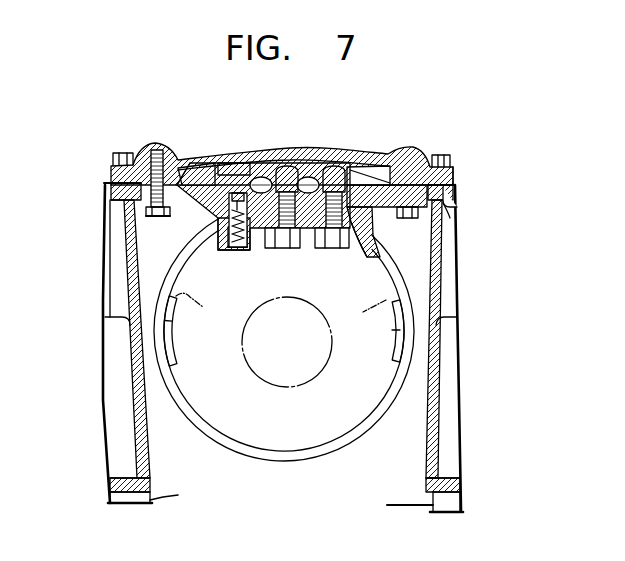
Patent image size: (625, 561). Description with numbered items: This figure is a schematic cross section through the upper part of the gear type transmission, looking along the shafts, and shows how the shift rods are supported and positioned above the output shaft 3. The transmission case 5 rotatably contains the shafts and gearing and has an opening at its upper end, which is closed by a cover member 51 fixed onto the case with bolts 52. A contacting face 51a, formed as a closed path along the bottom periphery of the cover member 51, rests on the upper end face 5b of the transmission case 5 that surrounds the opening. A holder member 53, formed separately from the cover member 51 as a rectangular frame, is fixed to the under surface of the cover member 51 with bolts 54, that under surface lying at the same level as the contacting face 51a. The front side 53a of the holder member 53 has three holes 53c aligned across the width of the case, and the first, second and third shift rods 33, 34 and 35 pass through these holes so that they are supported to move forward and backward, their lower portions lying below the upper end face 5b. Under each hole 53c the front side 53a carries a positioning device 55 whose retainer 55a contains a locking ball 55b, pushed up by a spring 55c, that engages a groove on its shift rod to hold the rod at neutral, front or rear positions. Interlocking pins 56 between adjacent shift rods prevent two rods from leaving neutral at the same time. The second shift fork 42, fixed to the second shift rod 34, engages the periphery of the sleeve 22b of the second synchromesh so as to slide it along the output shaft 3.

The output shaft 3 is at (322, 366).
The transmission case 5 is at (133, 373).
The upper end face 5b is at (453, 197).
The sleeve 22b is at (240, 455).
The first shift rod 33 is at (336, 165).
The second shift rod 34 is at (284, 165).
The third shift rod 35 is at (240, 168).
The second shift fork 42 is at (167, 362).
The cover member 51 is at (383, 153).
The contacting face 51a is at (454, 169).
The bolts 52 is at (122, 152).
The holder member 53 is at (371, 240).
The front side 53a is at (374, 262).
The holes 53c is at (217, 163).
The bolts 54 is at (158, 218).
The positioning device 55 is at (334, 252).
The retainer 55a is at (254, 252).
The locking ball 55b is at (200, 210).
The spring 55c is at (243, 248).
The interlocking pins 56 is at (262, 176).